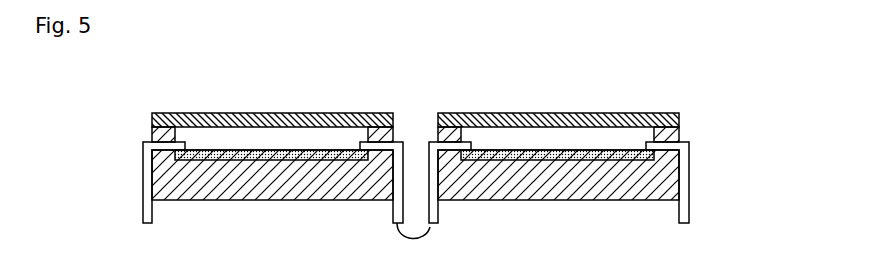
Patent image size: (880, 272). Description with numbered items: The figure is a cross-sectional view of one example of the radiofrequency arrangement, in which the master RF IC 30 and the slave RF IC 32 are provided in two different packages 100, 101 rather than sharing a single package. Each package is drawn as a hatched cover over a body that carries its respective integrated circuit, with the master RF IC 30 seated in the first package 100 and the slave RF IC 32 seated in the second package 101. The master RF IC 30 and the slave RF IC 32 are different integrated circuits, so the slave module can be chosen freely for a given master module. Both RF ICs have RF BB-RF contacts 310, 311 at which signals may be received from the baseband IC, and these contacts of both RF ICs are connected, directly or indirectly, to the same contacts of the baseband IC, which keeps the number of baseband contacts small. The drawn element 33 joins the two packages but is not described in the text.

The package 100 is at (260, 122).
The package 101 is at (443, 122).
The master RF IC 30 is at (323, 156).
The slave RF IC 32 is at (553, 156).
The RF BB-RF contact 311 is at (143, 142).
The RF BB-RF contact 310 is at (689, 142).
The connecting wire 33 is at (430, 227).